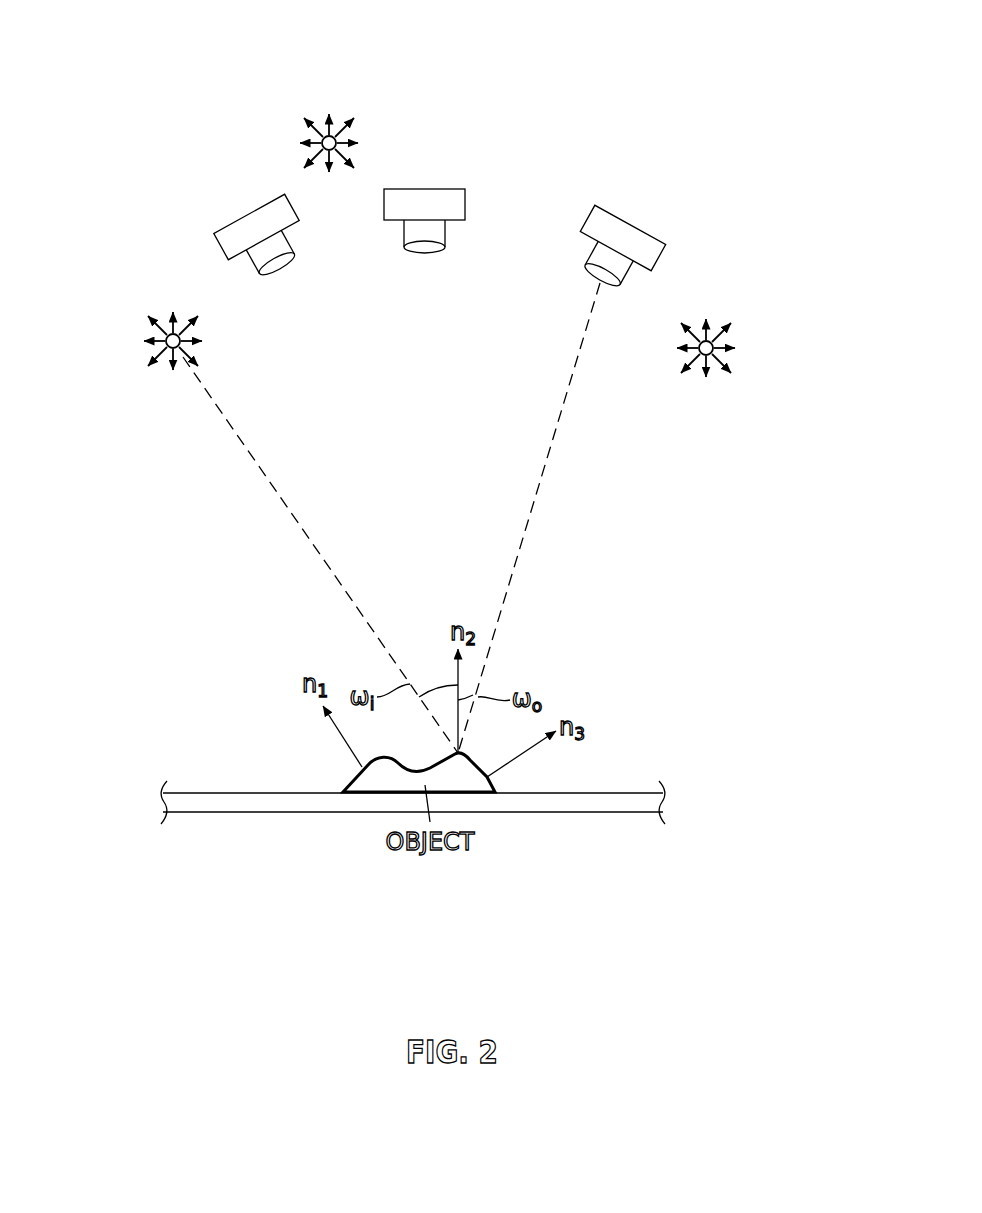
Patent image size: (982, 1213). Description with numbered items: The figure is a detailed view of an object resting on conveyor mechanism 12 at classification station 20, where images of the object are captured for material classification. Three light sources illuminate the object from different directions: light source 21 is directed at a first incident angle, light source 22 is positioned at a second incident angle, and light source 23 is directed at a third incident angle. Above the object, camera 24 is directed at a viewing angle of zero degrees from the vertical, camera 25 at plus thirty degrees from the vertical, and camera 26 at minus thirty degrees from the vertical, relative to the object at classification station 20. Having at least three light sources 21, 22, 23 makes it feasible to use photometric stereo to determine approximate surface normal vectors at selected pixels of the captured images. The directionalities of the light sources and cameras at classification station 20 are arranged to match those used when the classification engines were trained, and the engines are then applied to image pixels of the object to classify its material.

The conveyor mechanism 12 is at (613, 800).
The classification station 20 is at (267, 816).
The light source 21 is at (139, 331).
The light source 22 is at (302, 133).
The light source 23 is at (743, 342).
The camera 24 is at (465, 200).
The camera 25 is at (218, 247).
The camera 26 is at (660, 255).